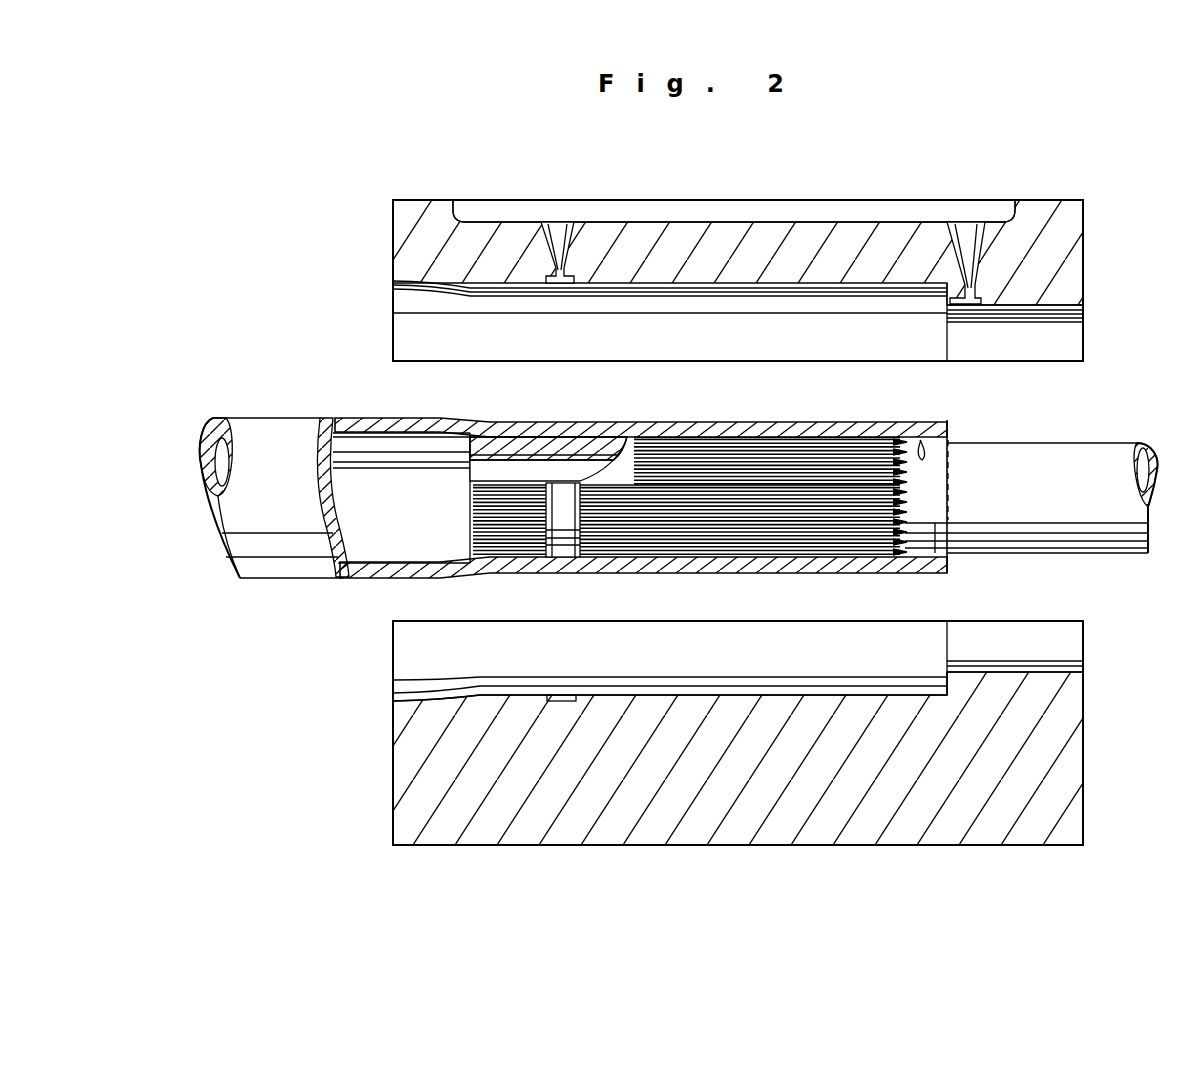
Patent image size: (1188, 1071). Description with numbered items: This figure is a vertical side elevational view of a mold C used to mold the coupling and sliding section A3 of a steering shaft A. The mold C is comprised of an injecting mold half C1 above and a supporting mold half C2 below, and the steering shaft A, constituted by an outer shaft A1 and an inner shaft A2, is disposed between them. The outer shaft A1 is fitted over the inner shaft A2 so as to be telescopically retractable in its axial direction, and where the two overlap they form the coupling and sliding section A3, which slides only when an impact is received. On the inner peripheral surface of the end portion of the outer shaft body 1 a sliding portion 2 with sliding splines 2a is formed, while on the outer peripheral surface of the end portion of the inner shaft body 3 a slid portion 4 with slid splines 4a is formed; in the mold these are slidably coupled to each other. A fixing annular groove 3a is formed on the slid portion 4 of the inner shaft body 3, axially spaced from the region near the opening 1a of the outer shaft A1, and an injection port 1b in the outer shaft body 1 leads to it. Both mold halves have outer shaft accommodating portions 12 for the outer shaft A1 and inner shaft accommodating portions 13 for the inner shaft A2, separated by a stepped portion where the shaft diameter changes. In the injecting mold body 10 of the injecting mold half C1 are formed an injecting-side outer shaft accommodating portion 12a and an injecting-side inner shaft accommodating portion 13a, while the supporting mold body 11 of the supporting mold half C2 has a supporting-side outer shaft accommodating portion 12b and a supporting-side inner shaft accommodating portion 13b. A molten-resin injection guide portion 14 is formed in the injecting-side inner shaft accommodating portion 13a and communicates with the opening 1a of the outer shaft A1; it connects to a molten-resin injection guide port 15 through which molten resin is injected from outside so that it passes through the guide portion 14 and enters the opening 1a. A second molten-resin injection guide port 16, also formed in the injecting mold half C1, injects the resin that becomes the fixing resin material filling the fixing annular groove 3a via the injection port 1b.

The steering shaft A is at (273, 412).
The outer shaft A1 is at (340, 416).
The inner shaft A2 is at (1050, 447).
The coupling and sliding section A3 is at (828, 422).
The outer shaft body 1 is at (678, 423).
The opening 1a is at (926, 441).
The injection port 1b is at (565, 432).
The sliding portion 2 is at (922, 458).
The sliding splines 2a is at (934, 530).
The inner shaft body 3 is at (1120, 550).
The fixing annular groove 3a is at (566, 560).
The slid portion 4 is at (836, 540).
The slid splines 4a is at (806, 515).
The mold C is at (1090, 242).
The injecting mold half C1 is at (1047, 196).
The supporting mold half C2 is at (1086, 758).
The injecting mold body 10 is at (1084, 287).
The supporting mold body 11 is at (1085, 700).
The outer shaft accommodating portion 12 is at (430, 320).
The injecting-side outer shaft accommodating portion 12a is at (499, 338).
The supporting-side outer shaft accommodating portion 12b is at (428, 668).
The inner shaft accommodating portion 13 is at (1072, 338).
The injecting-side inner shaft accommodating portion 13a is at (1030, 333).
The supporting-side inner shaft accommodating portion 13b is at (1046, 630).
The molten-resin injection guide portion 14 is at (970, 306).
The molten-resin injection guide port 15 is at (969, 232).
The molten-resin injection guide port 16 is at (565, 235).